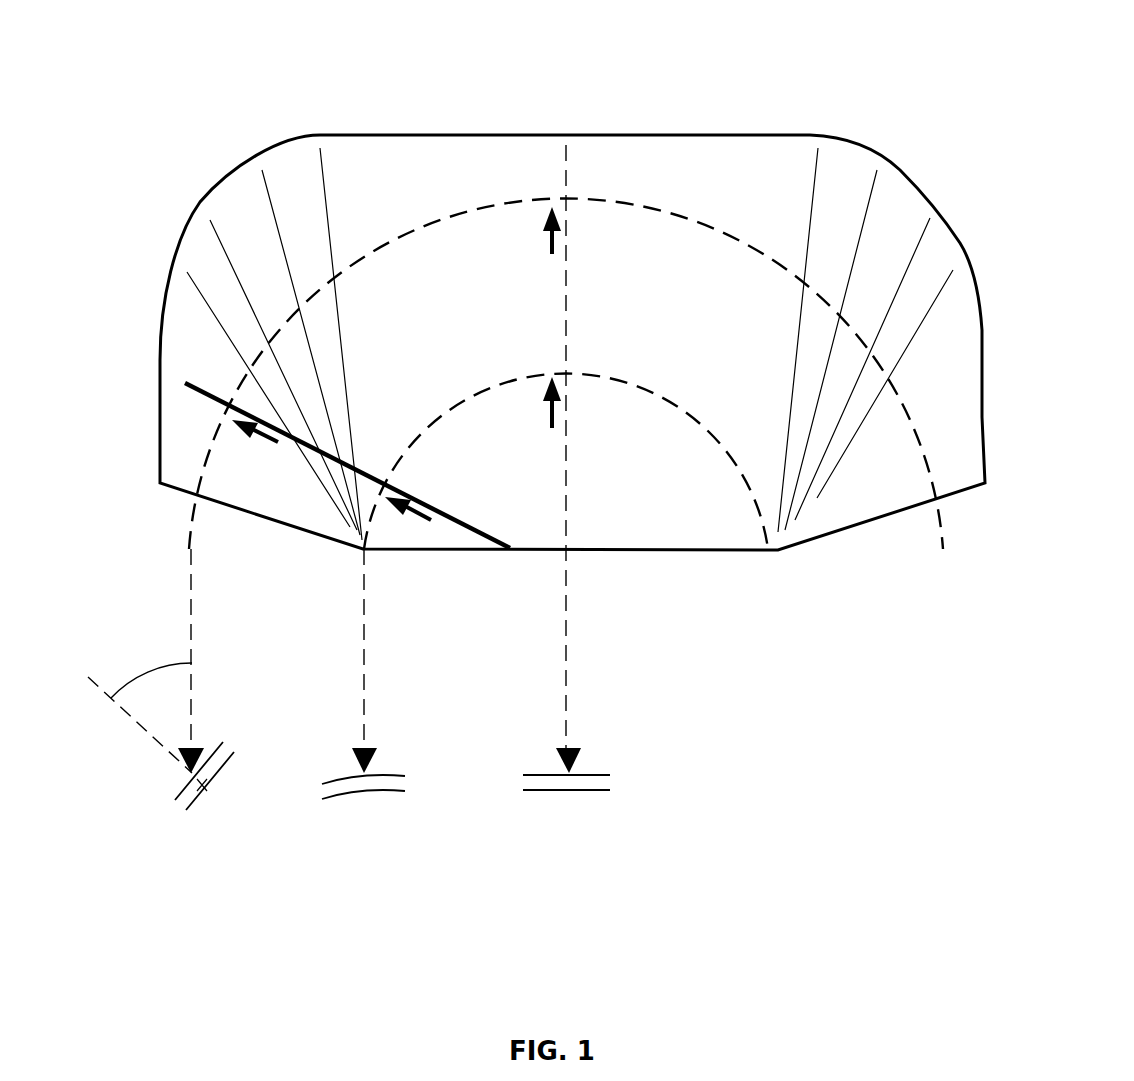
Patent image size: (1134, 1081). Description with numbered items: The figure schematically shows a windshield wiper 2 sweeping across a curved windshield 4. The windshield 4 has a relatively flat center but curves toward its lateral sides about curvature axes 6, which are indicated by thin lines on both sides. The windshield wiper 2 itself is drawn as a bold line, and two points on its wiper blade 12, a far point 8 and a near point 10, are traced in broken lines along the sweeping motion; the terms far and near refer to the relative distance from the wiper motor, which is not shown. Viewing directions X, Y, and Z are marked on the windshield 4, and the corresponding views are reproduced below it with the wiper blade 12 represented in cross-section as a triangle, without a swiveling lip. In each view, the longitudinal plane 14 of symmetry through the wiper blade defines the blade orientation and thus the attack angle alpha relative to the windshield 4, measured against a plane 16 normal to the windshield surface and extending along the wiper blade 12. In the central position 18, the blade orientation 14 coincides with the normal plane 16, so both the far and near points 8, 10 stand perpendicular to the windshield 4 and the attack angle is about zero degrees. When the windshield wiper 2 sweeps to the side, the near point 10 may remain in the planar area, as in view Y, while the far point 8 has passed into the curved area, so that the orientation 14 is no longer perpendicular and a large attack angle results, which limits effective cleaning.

The windshield wiper 2 is at (528, 289).
The curved windshield 4 is at (742, 165).
The curvature axes 6 is at (240, 280).
The far point 8 is at (235, 407).
The near point 10 is at (395, 498).
The wiper blade 12 is at (203, 747).
The longitudinal plane of symmetry 14 is at (191, 633).
The normal plane 16 is at (138, 722).
The central position 18 is at (605, 755).